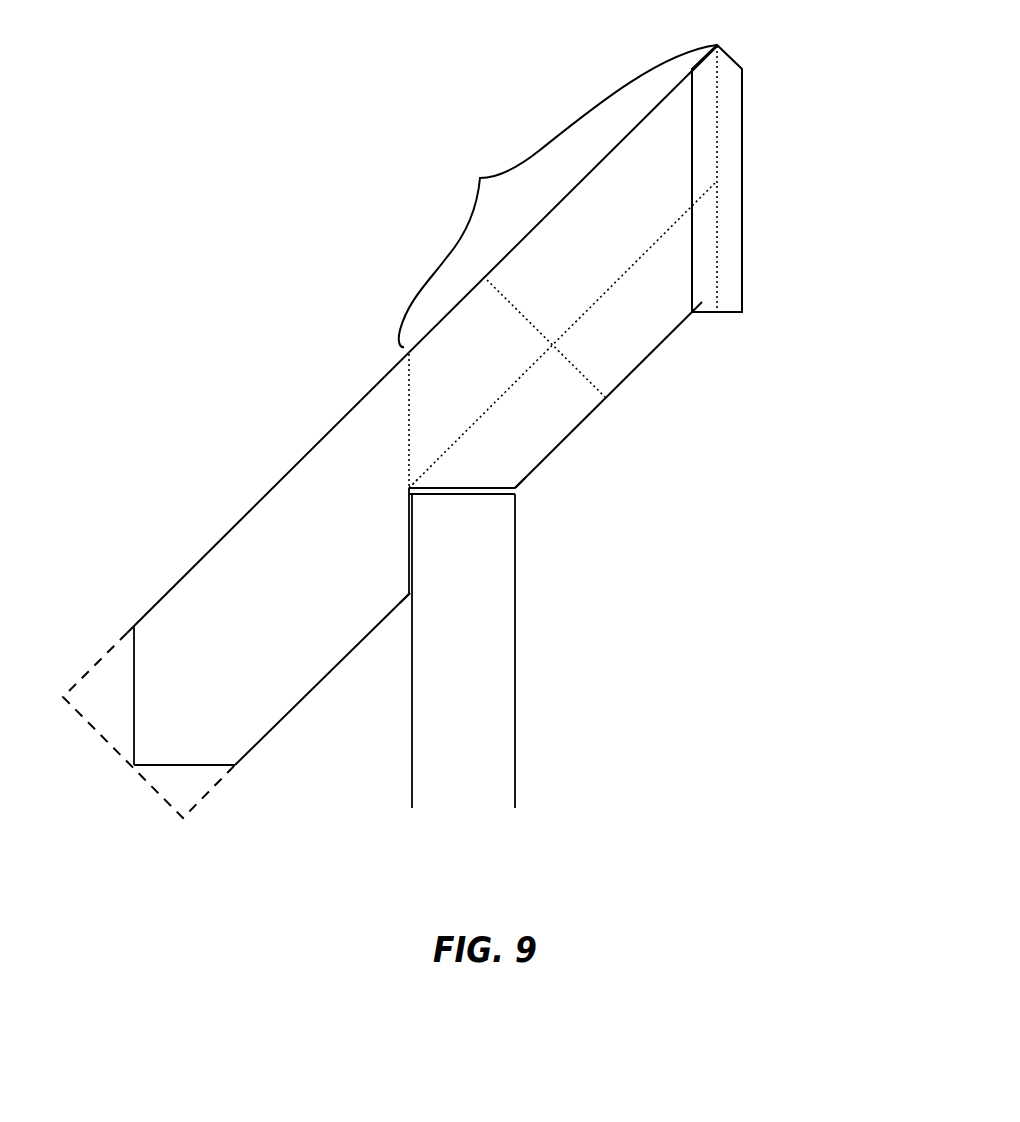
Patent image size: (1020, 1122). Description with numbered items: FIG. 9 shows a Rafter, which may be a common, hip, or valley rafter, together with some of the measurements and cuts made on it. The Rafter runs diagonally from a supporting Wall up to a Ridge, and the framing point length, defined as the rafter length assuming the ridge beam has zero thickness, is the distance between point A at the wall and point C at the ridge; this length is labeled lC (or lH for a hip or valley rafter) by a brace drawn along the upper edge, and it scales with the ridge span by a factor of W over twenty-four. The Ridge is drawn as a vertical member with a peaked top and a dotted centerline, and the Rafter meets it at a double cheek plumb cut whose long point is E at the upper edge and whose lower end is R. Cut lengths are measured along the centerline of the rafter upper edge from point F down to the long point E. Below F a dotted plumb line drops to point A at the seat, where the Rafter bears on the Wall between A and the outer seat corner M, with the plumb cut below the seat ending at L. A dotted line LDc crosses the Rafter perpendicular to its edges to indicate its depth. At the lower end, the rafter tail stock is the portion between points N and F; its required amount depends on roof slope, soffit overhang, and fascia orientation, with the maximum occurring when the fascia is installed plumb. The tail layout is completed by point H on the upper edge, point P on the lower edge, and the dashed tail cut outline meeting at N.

The rafter Rafter is at (573, 428).
The ridge Ridge is at (742, 233).
The wall Wall is at (515, 720).
The point H is at (131, 682).
The point N is at (141, 725).
The point P is at (194, 778).
The point L is at (398, 591).
The point M is at (514, 475).
The point F is at (419, 421).
The point C is at (563, 328).
The point A is at (388, 488).
The rafter depth line LDc is at (546, 338).
The point E is at (694, 64).
The point R is at (687, 308).
The length lC is at (480, 178).